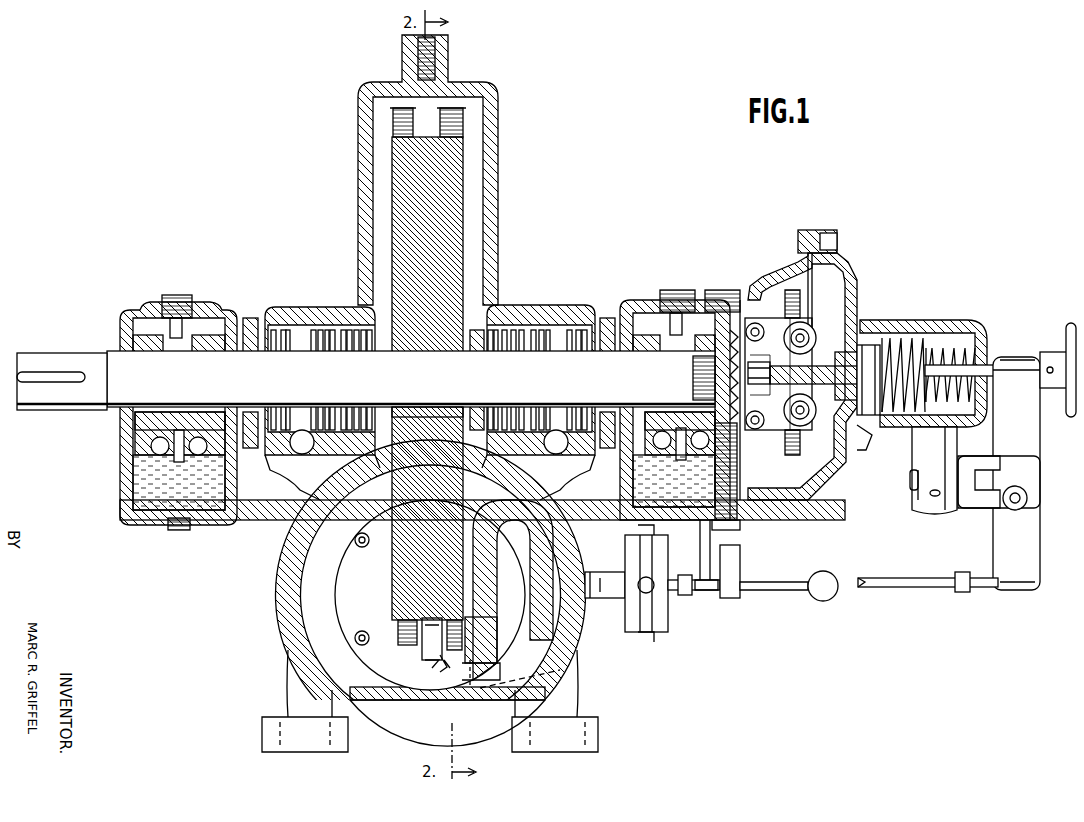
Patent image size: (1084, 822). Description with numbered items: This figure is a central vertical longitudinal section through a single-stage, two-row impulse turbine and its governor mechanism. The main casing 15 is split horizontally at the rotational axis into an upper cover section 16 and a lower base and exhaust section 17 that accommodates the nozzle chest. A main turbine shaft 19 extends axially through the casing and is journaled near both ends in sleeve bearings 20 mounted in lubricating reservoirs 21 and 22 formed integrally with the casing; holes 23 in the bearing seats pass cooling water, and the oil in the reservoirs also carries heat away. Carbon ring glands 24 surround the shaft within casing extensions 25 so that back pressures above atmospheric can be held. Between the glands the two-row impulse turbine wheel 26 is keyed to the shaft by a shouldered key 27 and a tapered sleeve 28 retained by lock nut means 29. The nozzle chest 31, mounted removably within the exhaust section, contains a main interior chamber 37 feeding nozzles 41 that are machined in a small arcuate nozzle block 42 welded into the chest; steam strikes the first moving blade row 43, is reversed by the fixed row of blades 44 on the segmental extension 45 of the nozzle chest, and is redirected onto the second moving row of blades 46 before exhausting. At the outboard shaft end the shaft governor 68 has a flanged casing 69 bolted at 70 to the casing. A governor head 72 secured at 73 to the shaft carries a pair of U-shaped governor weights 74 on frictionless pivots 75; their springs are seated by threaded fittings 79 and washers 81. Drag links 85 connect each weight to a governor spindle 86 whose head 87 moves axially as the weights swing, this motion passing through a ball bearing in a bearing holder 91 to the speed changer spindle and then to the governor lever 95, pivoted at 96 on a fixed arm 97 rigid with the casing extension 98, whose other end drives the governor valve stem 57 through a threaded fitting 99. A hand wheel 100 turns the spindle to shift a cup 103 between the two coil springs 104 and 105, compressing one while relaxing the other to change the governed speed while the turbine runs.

The main casing 15 is at (271, 587).
The upper cover section 16 is at (498, 190).
The lower base and exhaust section 17 is at (297, 622).
The main turbine shaft 19 is at (120, 370).
The sleeve bearings 20 is at (138, 422).
The lubricating reservoir 21 is at (150, 478).
The lubricating reservoir 22 is at (645, 480).
The water cooling holes 23 is at (190, 448).
The carbon ring glands 24 is at (320, 335).
The casing extensions 25 is at (272, 312).
The two-row impulse turbine wheel 26 is at (400, 190).
The shouldered key 27 is at (392, 386).
The tapered sleeve 28 is at (425, 412).
The lock nut means 29 is at (498, 325).
The nozzle chest 31 is at (540, 610).
The main interior chamber 37 is at (545, 662).
The nozzles 41 is at (472, 685).
The arcuate nozzle block 42 is at (495, 622).
The first moving blade row 43 is at (470, 625).
The fixed row of blades 44 is at (428, 660).
The segmental extension 45 is at (445, 668).
The second moving row of blades 46 is at (393, 123).
The governor valve stem 57 is at (878, 590).
The shaft governor 68 is at (828, 300).
The flanged casing 69 is at (857, 288).
The bolts 70 is at (840, 240).
The governor head 72 is at (730, 335).
The securing means 73 is at (698, 380).
The governor weights 74 is at (770, 326).
The frictionless pivots 75 is at (754, 322).
The screw-threaded fittings 79 is at (793, 288).
The washers 81 is at (820, 320).
The drag links 85 is at (762, 362).
The governor spindle 86 is at (812, 372).
The spindle head 87 is at (830, 396).
The bearing holder 91 is at (862, 432).
The governor lever 95 is at (1035, 548).
The pivot 96 is at (1030, 498).
The fixed arm 97 is at (922, 498).
The casing extension 98 is at (955, 322).
The screw-threaded fitting 99 is at (966, 594).
The hand wheel 100 is at (1076, 415).
The cup 103 is at (912, 336).
The coil spring 104 is at (985, 365).
The coil spring 105 is at (903, 418).